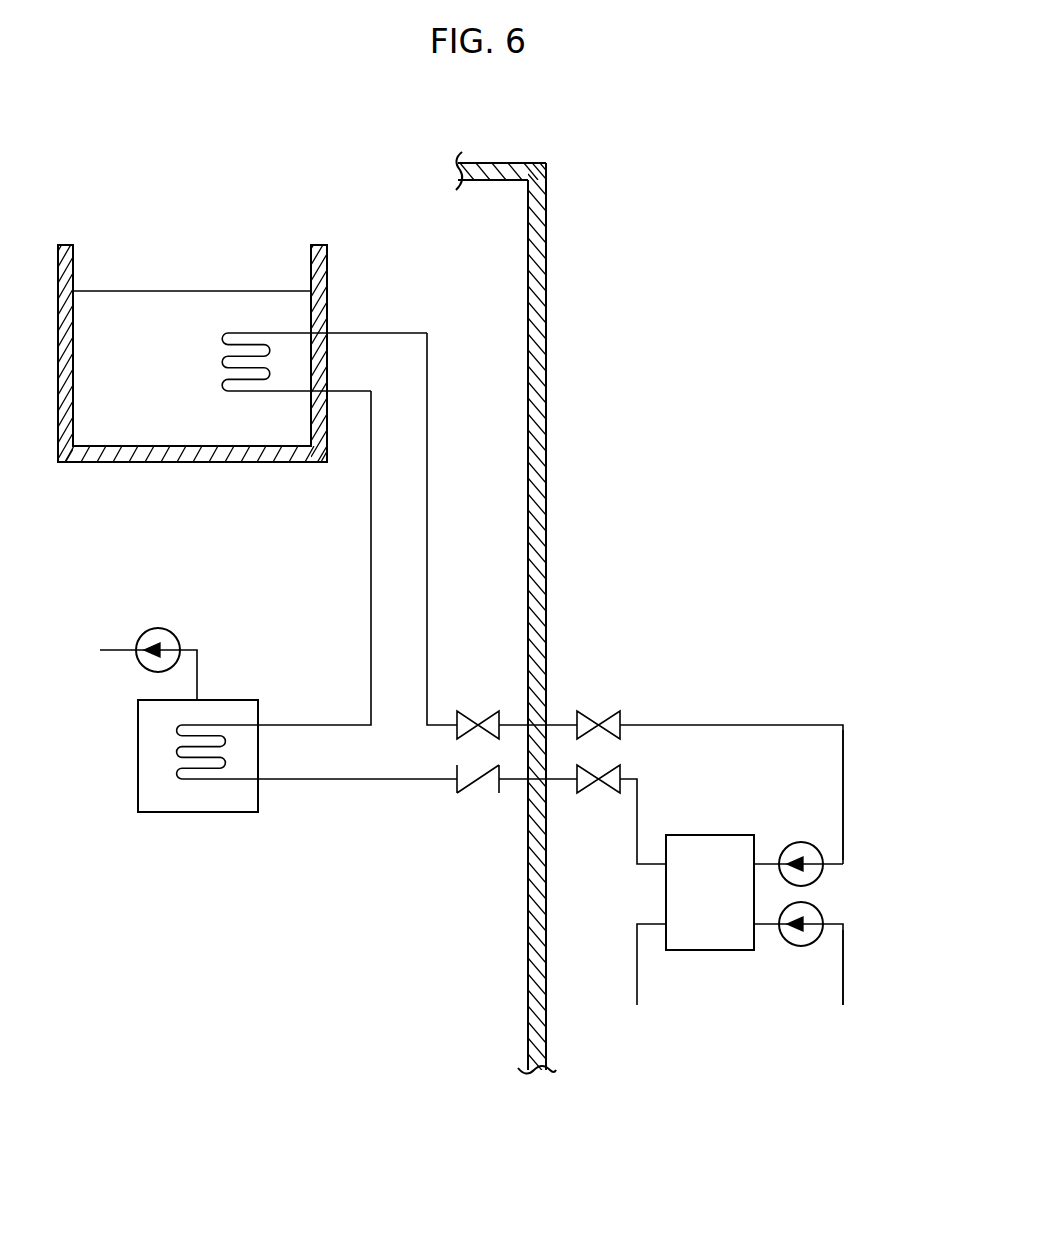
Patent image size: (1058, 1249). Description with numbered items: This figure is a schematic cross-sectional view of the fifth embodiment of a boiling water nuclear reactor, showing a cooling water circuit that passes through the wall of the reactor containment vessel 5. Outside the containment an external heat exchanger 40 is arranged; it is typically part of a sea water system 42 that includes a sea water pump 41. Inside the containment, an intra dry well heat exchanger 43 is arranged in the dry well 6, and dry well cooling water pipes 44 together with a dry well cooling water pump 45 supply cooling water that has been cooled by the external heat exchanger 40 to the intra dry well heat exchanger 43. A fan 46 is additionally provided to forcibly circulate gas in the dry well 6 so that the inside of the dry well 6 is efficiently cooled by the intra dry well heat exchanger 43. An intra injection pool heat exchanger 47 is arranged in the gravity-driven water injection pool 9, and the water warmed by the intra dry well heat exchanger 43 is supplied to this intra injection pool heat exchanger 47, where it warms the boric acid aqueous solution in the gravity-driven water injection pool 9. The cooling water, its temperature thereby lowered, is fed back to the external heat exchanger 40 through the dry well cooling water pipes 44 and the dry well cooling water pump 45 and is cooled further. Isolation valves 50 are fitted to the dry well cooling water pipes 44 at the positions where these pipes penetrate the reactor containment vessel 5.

The reactor containment vessel 5 is at (552, 190).
The dry well 6 is at (498, 273).
The gravity-driven water injection pool 9 is at (162, 422).
The external heat exchanger 40 is at (708, 950).
The sea water pump 41 is at (822, 912).
The sea water system 42 is at (846, 976).
The intra dry well heat exchanger 43 is at (198, 812).
The dry well cooling water pipes 44 is at (843, 775).
The dry well cooling water pump 45 is at (822, 873).
The fan 46 is at (157, 628).
The intra injection pool heat exchanger 47 is at (247, 333).
The isolation valves 50 is at (470, 793).